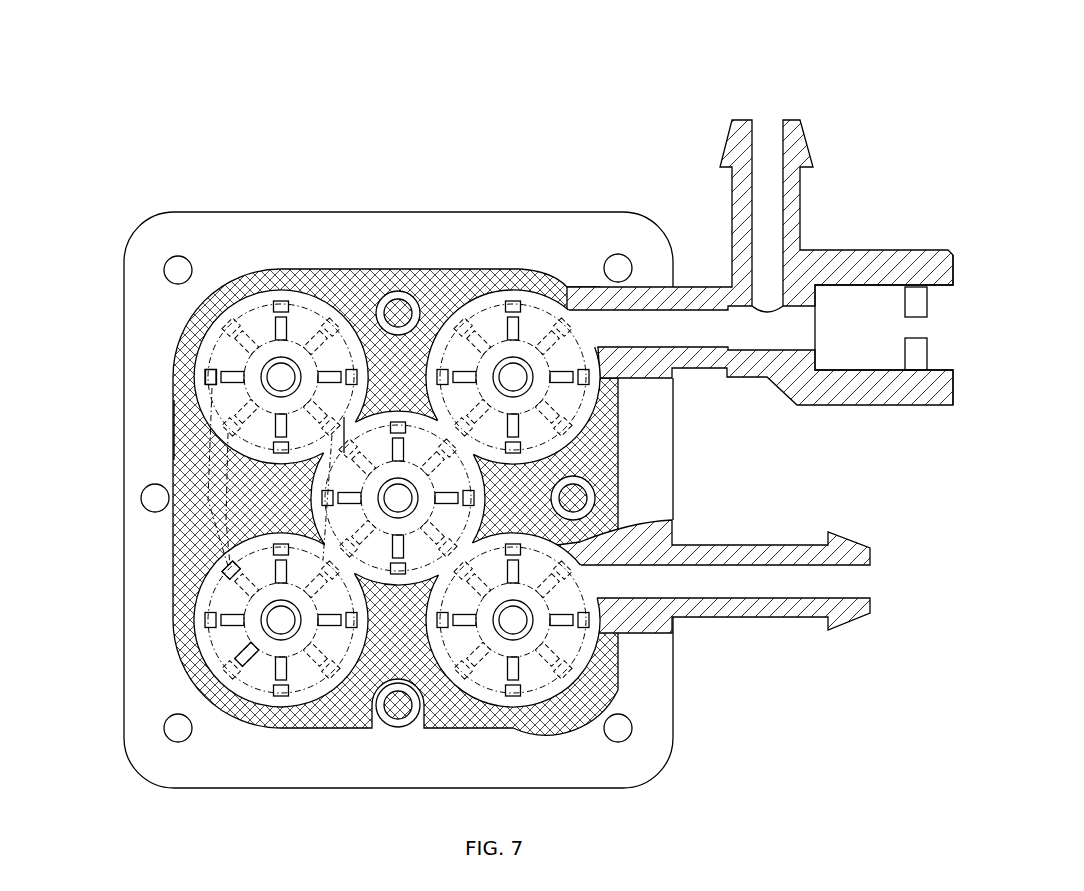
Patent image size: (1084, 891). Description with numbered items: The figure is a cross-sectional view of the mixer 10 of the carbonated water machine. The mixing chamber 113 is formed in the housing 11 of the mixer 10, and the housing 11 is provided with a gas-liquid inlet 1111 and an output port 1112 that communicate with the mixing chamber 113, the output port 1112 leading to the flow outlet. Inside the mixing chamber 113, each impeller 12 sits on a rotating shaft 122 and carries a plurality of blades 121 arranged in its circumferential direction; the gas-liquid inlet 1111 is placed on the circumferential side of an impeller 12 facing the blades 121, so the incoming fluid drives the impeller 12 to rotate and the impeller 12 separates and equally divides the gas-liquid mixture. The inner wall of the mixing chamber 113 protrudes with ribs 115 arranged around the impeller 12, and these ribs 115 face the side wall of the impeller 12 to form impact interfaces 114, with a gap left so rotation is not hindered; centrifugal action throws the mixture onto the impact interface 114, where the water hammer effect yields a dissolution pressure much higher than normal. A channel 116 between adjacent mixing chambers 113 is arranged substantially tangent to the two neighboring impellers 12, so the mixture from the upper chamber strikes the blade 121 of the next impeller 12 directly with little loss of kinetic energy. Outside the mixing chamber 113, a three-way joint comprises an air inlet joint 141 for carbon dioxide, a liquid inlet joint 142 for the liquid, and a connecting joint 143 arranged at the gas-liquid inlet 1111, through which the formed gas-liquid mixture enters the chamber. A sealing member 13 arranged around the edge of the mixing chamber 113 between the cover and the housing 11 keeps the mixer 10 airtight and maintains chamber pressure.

The mixer 10 is at (499, 36).
The housing 11 is at (464, 243).
The impeller 12 is at (202, 618).
The sealing member 13 is at (499, 418).
The mixing chamber 113 is at (537, 312).
The impact interface 114 is at (212, 356).
The rib 115 is at (178, 430).
The channel 116 is at (198, 467).
The blade 121 is at (228, 654).
The rotating shaft 122 is at (228, 565).
The air inlet joint 141 is at (870, 407).
The liquid inlet joint 142 is at (802, 207).
The connecting joint 143 is at (703, 285).
The gas-liquid inlet 1111 is at (660, 345).
The output port 1112 is at (659, 593).